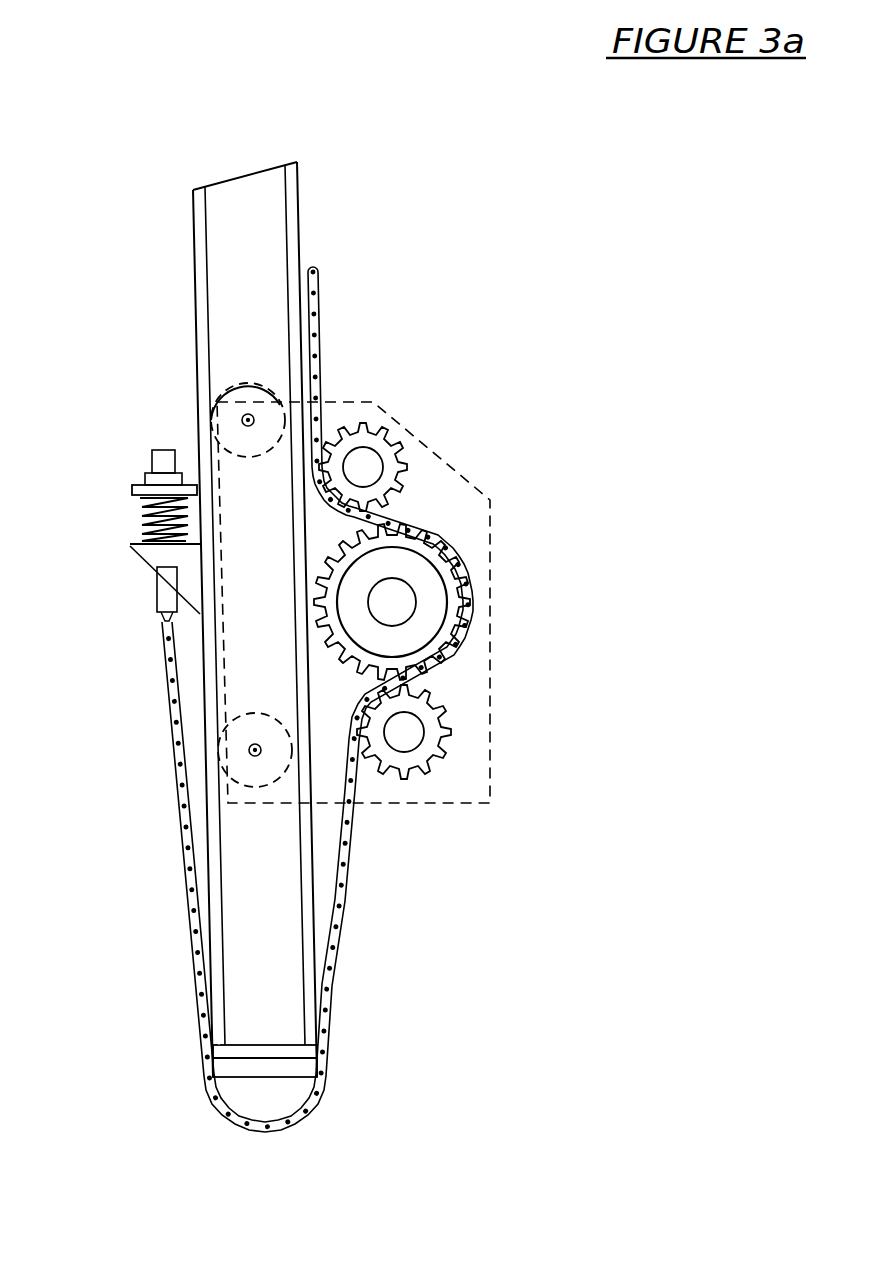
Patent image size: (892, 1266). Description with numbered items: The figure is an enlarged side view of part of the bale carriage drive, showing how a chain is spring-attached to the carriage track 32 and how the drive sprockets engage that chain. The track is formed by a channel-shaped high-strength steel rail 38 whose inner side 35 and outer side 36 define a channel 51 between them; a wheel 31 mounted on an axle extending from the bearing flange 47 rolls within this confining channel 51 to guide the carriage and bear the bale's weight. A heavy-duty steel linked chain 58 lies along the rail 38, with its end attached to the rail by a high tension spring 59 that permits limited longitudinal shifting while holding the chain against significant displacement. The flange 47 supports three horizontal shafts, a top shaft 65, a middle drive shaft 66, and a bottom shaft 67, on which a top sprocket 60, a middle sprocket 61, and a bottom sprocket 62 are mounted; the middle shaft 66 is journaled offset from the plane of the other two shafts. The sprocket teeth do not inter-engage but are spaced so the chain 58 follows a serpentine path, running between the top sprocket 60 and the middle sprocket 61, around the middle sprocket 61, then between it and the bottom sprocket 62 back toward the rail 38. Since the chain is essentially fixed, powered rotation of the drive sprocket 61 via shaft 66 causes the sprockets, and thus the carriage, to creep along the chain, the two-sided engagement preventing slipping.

The wheel 31 is at (247, 390).
The carriage track 32 is at (262, 775).
The inner side 35 is at (193, 208).
The outer side 36 is at (290, 175).
The rail 38 is at (147, 617).
The bearing flange 47 is at (416, 600).
The channel 51 is at (255, 219).
The chain 58 is at (322, 699).
The spring 59 is at (110, 535).
The top sprocket 60 is at (370, 435).
The middle sprocket 61 is at (462, 602).
The bottom sprocket 62 is at (440, 755).
The top shaft 65 is at (363, 467).
The middle drive shaft 66 is at (397, 603).
The bottom shaft 67 is at (404, 723).